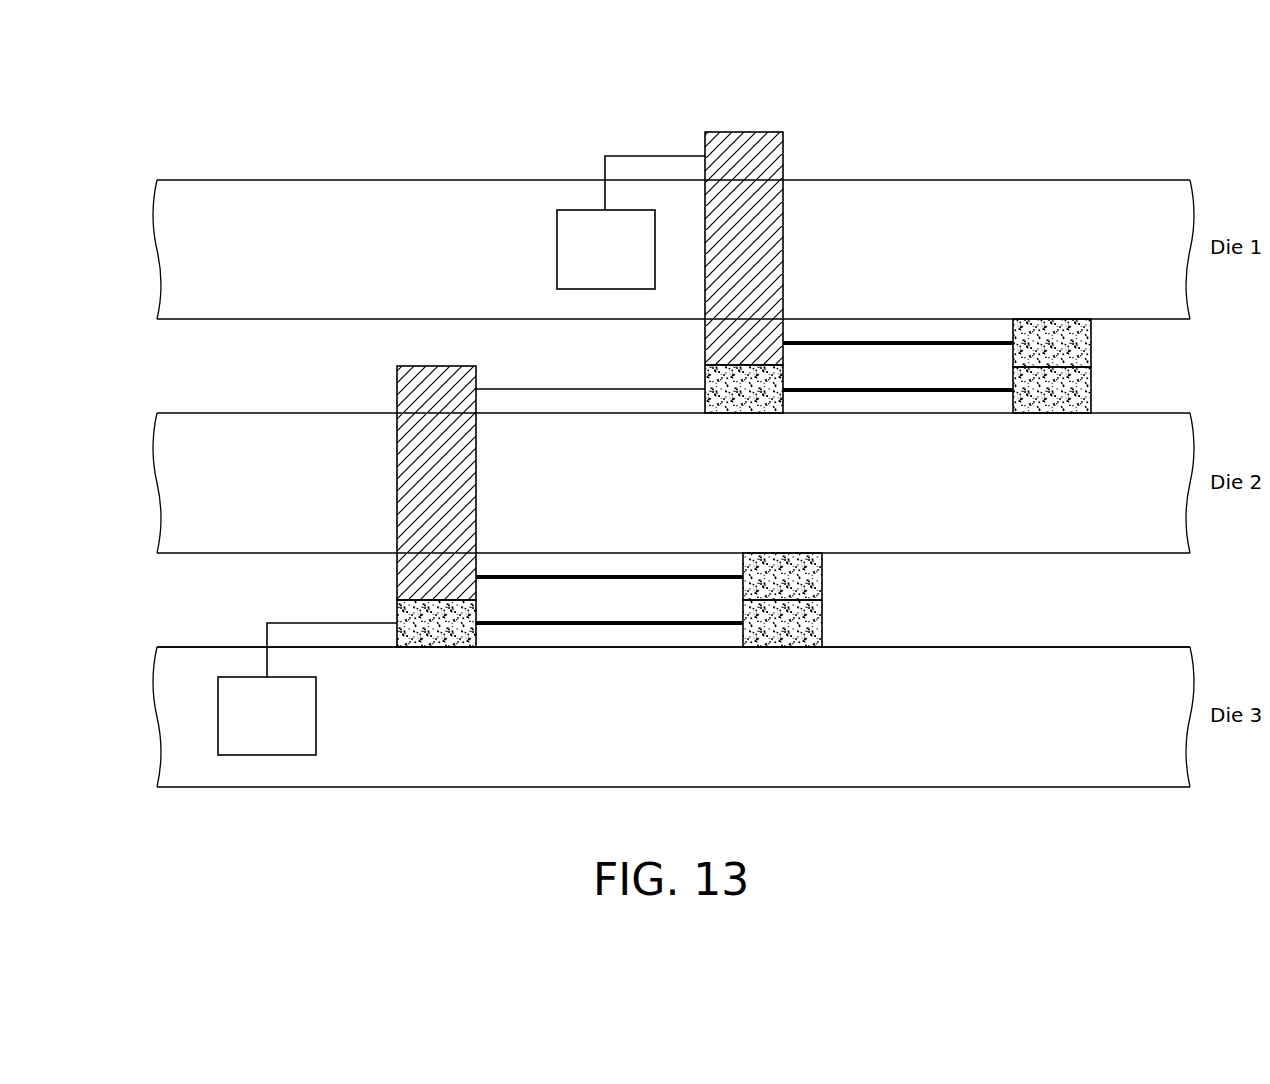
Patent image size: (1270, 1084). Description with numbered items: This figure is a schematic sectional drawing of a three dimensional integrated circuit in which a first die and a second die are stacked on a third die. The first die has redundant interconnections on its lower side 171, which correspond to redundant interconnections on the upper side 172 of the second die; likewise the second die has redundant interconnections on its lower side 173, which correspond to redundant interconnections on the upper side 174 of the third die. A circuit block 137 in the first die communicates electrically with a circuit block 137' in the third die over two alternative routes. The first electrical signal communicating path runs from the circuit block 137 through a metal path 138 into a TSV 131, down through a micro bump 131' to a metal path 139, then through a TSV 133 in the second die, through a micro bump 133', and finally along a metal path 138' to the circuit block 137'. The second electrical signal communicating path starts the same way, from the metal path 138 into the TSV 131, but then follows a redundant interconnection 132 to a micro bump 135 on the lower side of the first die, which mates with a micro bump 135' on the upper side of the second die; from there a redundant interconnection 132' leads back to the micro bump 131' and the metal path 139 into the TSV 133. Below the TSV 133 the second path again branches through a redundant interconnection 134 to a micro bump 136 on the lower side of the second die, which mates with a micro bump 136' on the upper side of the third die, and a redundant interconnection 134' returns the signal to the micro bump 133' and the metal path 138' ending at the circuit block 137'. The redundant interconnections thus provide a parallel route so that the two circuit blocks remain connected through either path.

The TSV 131 is at (782, 248).
The micro bump 131' is at (702, 380).
The redundant interconnection 132 is at (898, 361).
The redundant interconnection 132' is at (898, 372).
The TSV 133 is at (399, 483).
The micro bump 133' is at (396, 616).
The redundant interconnection 134 is at (609, 596).
The redundant interconnection 134' is at (609, 605).
The micro bump 135 is at (1090, 343).
The micro bump 135' is at (1093, 390).
The micro bump 136 is at (820, 576).
The micro bump 136' is at (823, 623).
The circuit block 137 is at (604, 207).
The circuit block 137' is at (267, 759).
The metal path 138 is at (655, 148).
The metal path 138' is at (328, 621).
The metal path 139 is at (575, 388).
The lower side 171 is at (1190, 302).
The upper side 172 is at (1190, 413).
The lower side 173 is at (1190, 553).
The upper side 174 is at (1190, 647).